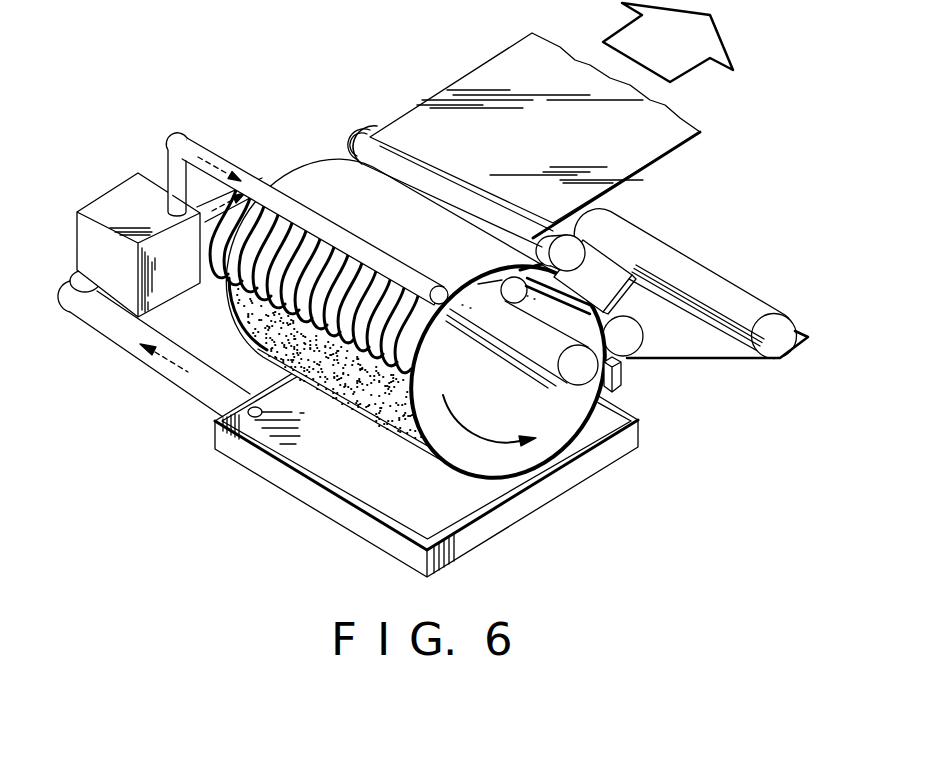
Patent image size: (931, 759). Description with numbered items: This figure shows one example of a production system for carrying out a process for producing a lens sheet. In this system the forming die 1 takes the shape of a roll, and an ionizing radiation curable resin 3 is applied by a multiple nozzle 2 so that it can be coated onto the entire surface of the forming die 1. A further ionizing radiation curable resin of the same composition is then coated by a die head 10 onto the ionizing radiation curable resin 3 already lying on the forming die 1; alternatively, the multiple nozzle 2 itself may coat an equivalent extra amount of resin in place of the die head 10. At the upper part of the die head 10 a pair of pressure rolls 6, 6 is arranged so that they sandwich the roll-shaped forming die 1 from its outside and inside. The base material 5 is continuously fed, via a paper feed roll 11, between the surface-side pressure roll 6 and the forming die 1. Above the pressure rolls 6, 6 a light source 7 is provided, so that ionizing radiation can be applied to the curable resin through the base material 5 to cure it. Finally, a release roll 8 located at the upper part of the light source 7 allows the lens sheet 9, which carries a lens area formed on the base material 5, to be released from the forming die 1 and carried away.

The forming die 1 is at (472, 478).
The multiple nozzle 2 is at (290, 203).
The ionizing radiation curable resin 3 is at (345, 395).
The base material 5 is at (706, 363).
The pressure rolls 6 is at (570, 382).
The light source 7 is at (617, 286).
The release roll 8 is at (366, 128).
The lens sheet 9 is at (487, 80).
The die head 10 is at (620, 380).
The paper feed roll 11 is at (730, 290).